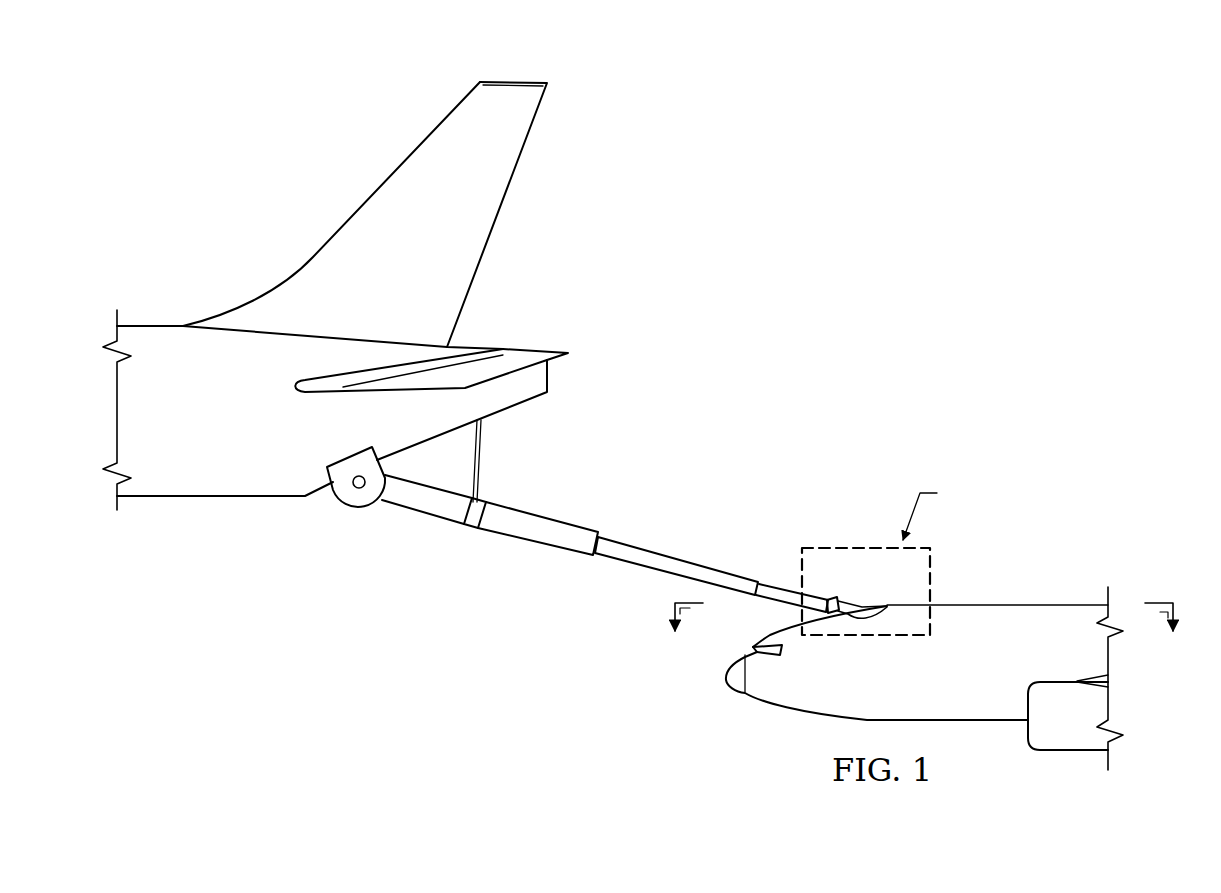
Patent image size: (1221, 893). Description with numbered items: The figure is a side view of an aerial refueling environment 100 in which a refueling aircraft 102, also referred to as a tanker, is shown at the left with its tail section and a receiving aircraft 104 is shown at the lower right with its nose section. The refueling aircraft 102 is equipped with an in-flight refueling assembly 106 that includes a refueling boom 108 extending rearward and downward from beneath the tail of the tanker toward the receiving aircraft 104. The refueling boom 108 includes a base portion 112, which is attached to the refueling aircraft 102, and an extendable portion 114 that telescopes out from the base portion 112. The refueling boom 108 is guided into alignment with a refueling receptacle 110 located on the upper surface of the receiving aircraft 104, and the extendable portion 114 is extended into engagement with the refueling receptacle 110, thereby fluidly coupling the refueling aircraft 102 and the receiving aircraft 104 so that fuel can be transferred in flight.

The aerial refueling environment 100 is at (955, 90).
The refueling aircraft 102 is at (267, 225).
The receiving aircraft 104 is at (993, 583).
The in-flight refueling assembly 106 is at (470, 622).
The refueling boom 108 is at (550, 555).
The refueling receptacle 110 is at (848, 602).
The base portion 112 is at (532, 512).
The extendable portion 114 is at (737, 558).